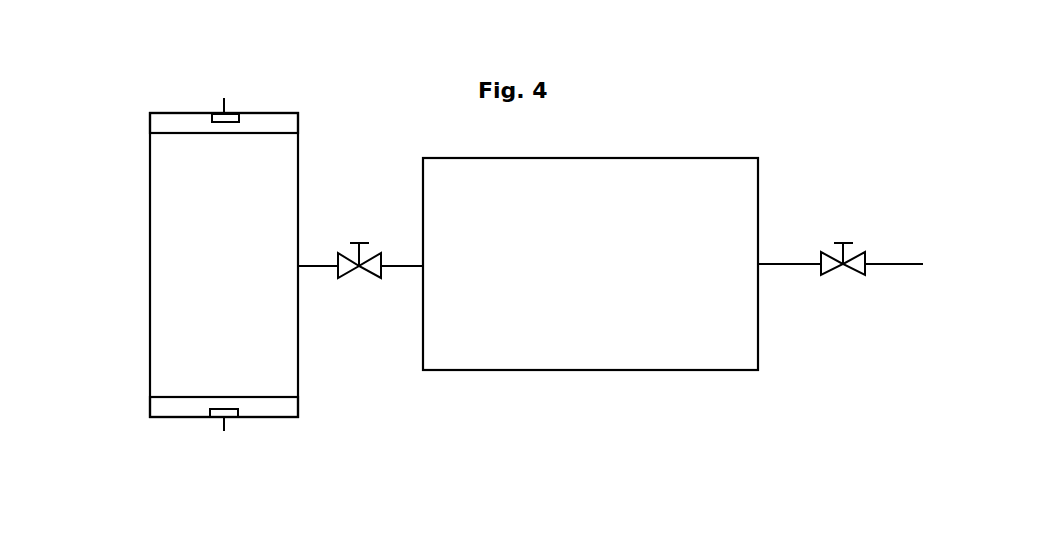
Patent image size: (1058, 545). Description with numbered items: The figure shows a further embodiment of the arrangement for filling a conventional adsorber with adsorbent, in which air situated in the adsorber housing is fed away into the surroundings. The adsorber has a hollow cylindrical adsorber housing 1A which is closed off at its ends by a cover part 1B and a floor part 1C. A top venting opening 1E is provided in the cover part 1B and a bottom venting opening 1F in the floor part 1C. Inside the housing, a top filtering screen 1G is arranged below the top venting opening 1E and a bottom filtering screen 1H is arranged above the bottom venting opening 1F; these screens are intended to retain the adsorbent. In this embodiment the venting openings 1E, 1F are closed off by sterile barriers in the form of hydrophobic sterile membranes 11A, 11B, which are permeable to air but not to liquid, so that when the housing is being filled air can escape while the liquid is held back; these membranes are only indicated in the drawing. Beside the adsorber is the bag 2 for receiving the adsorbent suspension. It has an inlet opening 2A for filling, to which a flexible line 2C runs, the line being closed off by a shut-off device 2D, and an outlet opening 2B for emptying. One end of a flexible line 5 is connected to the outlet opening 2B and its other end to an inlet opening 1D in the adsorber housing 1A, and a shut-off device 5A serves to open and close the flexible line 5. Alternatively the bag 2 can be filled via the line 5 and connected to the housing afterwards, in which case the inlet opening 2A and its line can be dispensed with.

The adsorber housing 1A is at (150, 264).
The cover part 1B is at (177, 112).
The floor part 1C is at (180, 417).
The inlet opening 1D is at (298, 265).
The top venting opening 1E is at (227, 110).
The bottom venting opening 1F is at (224, 431).
The top filtering screen 1G is at (265, 133).
The bottom filtering screen 1H is at (262, 397).
The sterile membrane 11A is at (212, 117).
The sterile membrane 11B is at (238, 412).
The flexible line 5 is at (403, 264).
The shut-off device 5A is at (352, 273).
The bag 2 is at (788, 182).
The inlet opening 2A is at (758, 264).
The outlet opening 2B is at (419, 268).
The flexible line 2C is at (894, 263).
The shut-off device 2D is at (855, 274).